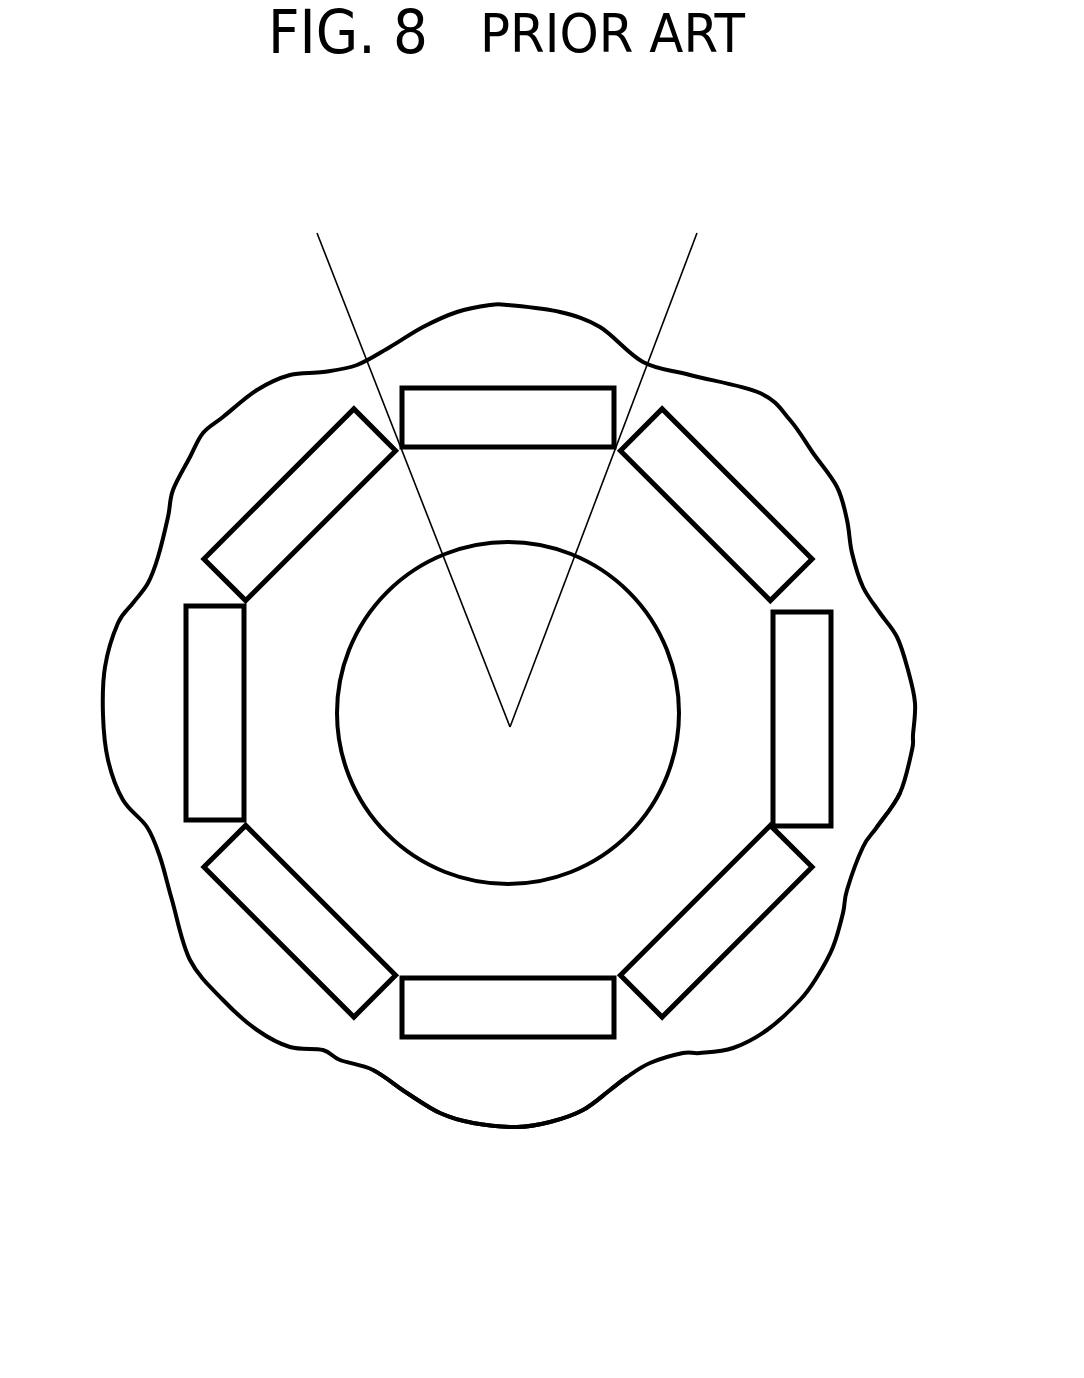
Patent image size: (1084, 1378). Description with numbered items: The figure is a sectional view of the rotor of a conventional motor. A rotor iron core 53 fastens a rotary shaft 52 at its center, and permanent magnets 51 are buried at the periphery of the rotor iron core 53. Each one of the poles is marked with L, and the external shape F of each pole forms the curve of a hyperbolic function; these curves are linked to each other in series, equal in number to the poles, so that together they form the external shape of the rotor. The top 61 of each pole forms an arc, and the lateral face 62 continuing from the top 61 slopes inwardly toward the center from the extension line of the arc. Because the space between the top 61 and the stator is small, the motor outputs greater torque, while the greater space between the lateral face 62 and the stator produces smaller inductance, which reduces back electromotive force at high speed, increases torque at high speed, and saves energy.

The permanent magnets 51 is at (728, 477).
The rotary shaft 52 is at (403, 763).
The rotor iron core 53 is at (863, 657).
The top 61 is at (513, 1127).
The lateral face 62 is at (405, 1095).
The external shape F is at (804, 997).
The pole L is at (677, 287).